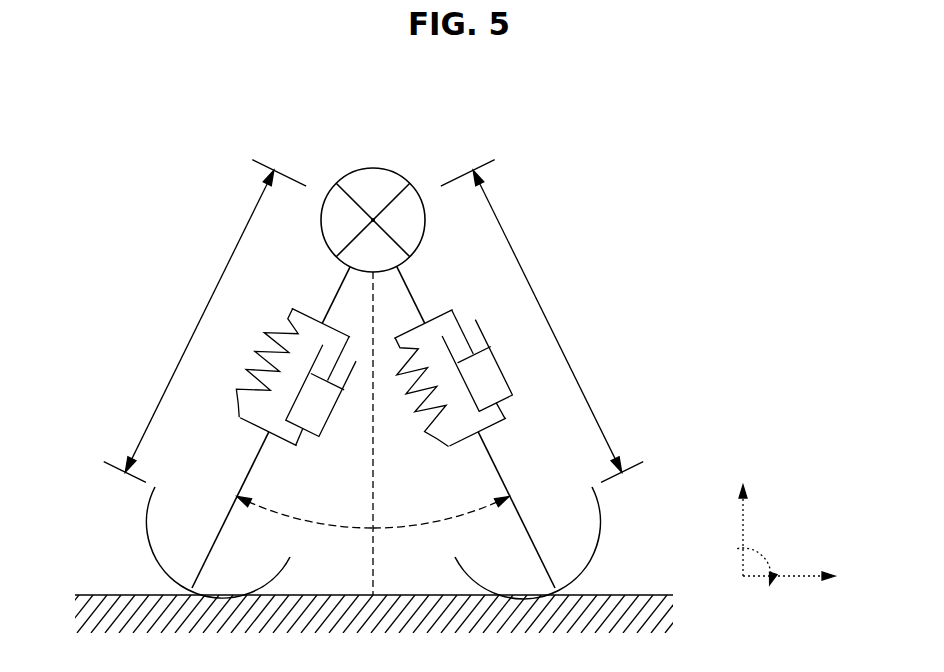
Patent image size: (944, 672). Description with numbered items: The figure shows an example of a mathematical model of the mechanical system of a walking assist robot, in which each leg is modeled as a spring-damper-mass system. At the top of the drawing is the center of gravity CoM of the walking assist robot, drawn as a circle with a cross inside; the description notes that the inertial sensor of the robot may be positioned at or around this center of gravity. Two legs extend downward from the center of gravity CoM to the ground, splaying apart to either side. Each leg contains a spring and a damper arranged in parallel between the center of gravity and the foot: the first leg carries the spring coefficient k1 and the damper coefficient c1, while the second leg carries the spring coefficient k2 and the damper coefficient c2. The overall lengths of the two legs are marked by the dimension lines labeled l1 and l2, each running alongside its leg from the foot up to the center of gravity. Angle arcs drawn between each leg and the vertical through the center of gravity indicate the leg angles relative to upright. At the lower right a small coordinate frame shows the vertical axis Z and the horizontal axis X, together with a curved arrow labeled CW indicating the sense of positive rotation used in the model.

The center of gravity CoM is at (373, 202).
The spring coefficient k1 is at (266, 363).
The damper coefficient c1 is at (322, 391).
The leg length l1 is at (205, 324).
The spring coefficient k2 is at (422, 392).
The damper coefficient c2 is at (482, 365).
The leg length l2 is at (542, 324).
The Z axis Z is at (744, 517).
The X axis X is at (798, 576).
The clockwise positive rotation direction CW is at (760, 584).